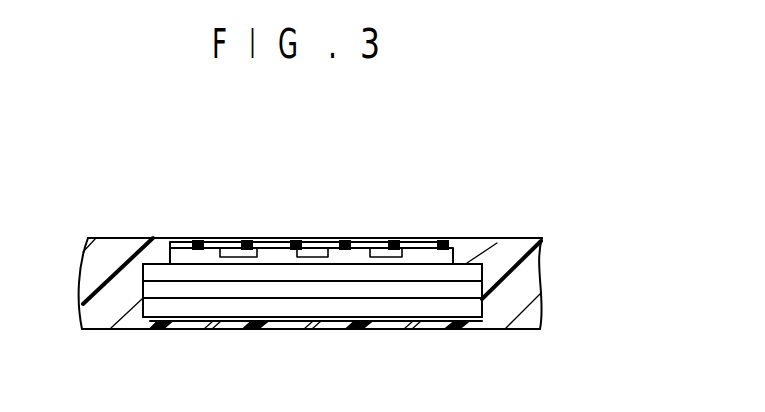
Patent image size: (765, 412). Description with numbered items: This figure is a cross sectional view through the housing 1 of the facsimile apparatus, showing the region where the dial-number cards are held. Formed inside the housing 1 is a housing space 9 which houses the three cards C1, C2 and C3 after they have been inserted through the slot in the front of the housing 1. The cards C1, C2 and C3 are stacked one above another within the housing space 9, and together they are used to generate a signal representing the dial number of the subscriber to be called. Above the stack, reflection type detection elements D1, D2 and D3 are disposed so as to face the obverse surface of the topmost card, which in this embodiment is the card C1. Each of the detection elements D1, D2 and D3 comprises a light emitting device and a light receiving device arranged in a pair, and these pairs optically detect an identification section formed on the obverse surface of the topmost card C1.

The housing 1 is at (497, 243).
The housing space 9 is at (480, 290).
The card C1 is at (192, 277).
The card C2 is at (284, 292).
The card C3 is at (360, 316).
The reflection type detection element D1 is at (240, 245).
The reflection type detection element D2 is at (318, 247).
The reflection type detection element D3 is at (387, 240).